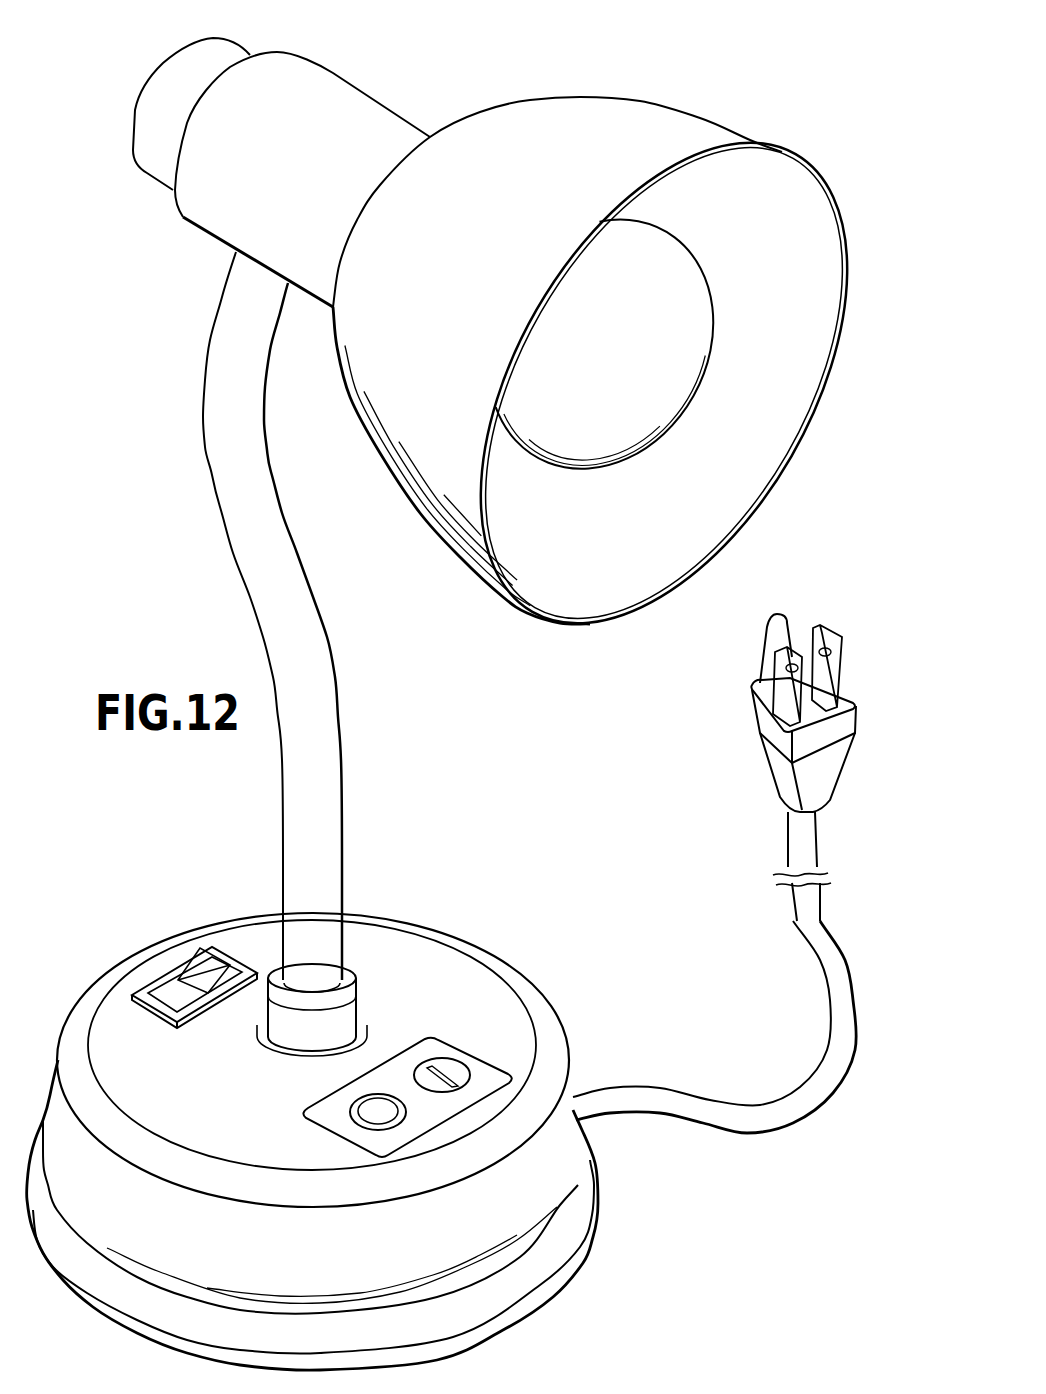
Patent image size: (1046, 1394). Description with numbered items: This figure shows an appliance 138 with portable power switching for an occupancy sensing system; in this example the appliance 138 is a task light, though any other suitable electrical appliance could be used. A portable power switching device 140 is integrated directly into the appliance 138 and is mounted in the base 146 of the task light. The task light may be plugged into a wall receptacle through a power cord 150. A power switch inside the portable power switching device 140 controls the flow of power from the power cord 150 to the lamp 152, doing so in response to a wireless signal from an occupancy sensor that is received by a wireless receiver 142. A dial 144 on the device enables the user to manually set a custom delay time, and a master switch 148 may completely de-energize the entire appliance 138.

The appliance 138 is at (741, 86).
The portable power switching device 140 is at (328, 1135).
The wireless receiver 142 is at (365, 1103).
The dial 144 is at (442, 1060).
The base 146 is at (478, 945).
The master switch 148 is at (203, 947).
The power cord 150 is at (647, 1087).
The lamp 152 is at (721, 341).